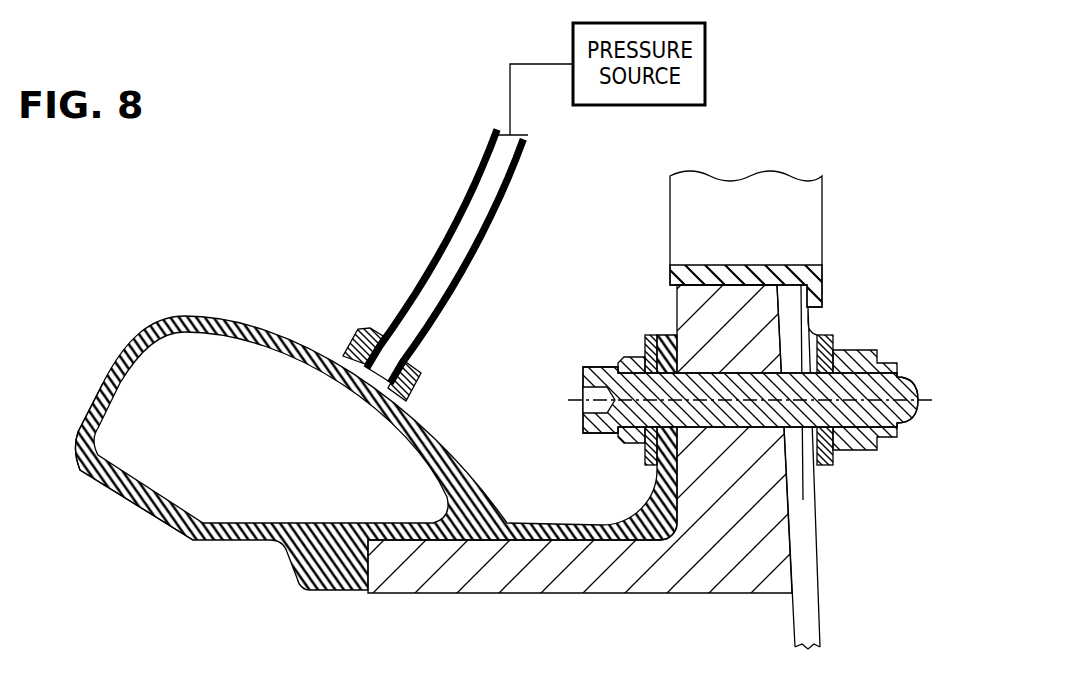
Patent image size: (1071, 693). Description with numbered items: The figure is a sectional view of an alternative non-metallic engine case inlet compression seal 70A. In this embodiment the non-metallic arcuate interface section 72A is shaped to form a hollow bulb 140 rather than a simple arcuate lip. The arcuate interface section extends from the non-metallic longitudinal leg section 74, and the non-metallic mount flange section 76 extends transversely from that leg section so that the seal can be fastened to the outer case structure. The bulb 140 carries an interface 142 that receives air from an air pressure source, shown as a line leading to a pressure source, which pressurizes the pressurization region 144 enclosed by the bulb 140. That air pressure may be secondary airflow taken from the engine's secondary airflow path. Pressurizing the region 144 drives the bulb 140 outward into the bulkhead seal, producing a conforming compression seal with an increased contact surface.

The non-metallic engine case inlet compression seal 70A is at (221, 276).
The non-metallic arcuate interface section 72A is at (83, 478).
The non-metallic longitudinal leg section 74 is at (552, 510).
The non-metallic mount flange section 76 is at (657, 325).
The bulb 140 is at (265, 314).
The interface 142 is at (422, 373).
The pressurization region 144 is at (257, 453).